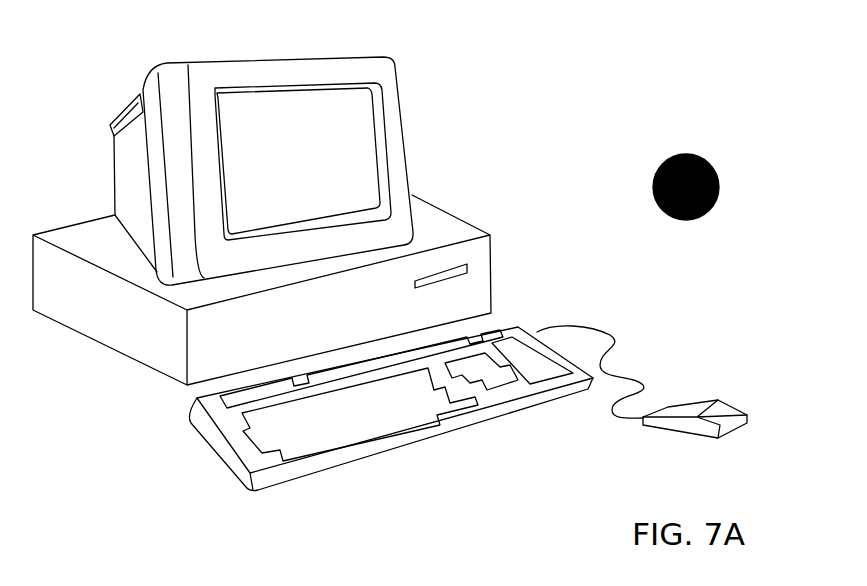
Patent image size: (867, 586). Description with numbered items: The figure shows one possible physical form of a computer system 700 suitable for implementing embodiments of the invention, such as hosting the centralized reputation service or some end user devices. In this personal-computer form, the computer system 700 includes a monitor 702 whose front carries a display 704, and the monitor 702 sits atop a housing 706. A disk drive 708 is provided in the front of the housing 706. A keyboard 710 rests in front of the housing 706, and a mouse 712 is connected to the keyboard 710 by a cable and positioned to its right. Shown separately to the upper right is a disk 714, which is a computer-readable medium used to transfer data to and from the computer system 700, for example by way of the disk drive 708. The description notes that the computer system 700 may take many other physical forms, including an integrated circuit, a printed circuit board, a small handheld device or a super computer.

The computer system 700 is at (604, 42).
The monitor 702 is at (300, 171).
The display 704 is at (368, 122).
The housing 706 is at (293, 310).
The disk drive 708 is at (468, 264).
The keyboard 710 is at (403, 449).
The mouse 712 is at (737, 408).
The disk 714 is at (703, 154).